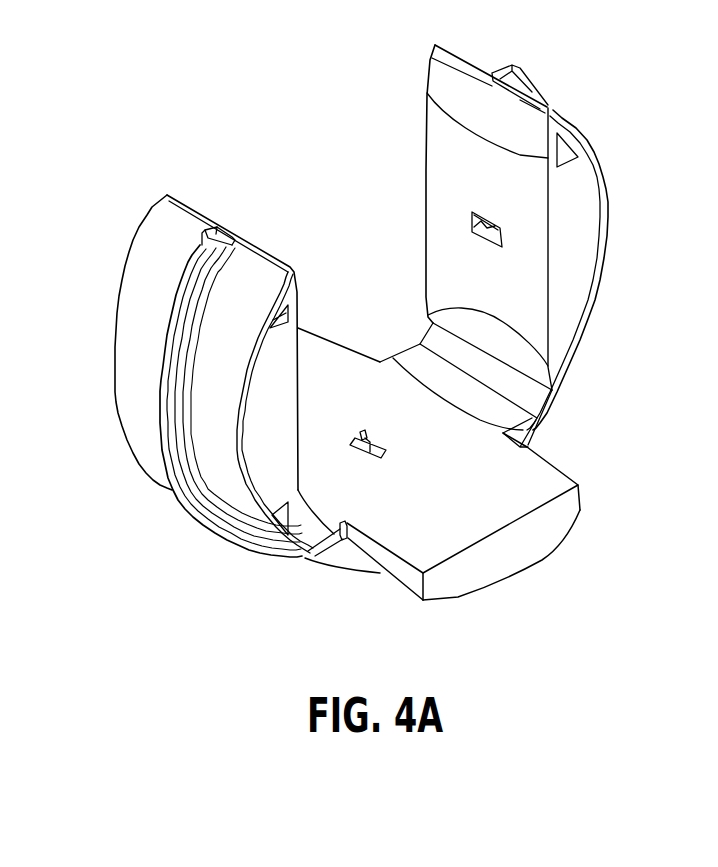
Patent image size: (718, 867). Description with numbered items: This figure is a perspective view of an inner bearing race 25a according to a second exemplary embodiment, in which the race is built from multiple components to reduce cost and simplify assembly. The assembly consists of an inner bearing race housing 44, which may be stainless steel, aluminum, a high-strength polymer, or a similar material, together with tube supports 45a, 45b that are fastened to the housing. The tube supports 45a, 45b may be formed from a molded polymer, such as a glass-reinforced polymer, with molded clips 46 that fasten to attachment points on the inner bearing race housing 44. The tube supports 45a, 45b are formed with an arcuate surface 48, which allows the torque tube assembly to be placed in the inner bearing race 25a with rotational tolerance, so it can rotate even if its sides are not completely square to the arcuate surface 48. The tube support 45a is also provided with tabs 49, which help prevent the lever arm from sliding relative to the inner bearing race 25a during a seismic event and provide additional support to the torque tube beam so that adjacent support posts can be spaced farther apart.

The inner bearing race 25a is at (210, 87).
The inner bearing race housing 44 is at (150, 303).
The tube support 45a is at (335, 453).
The tube support 45b is at (443, 178).
The molded clip 46 is at (502, 228).
The arcuate surface 48 is at (518, 438).
The tab 49 is at (322, 355).